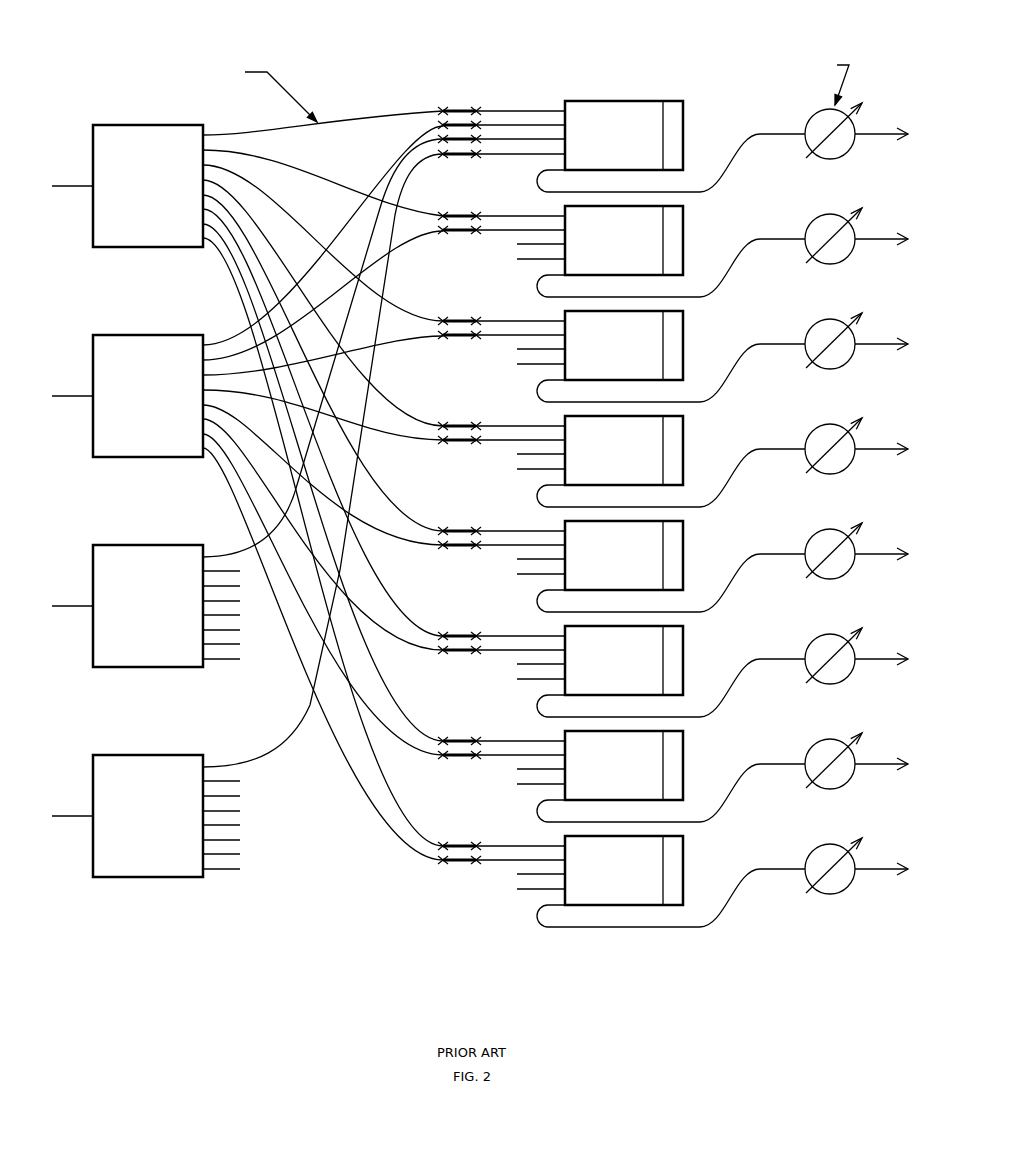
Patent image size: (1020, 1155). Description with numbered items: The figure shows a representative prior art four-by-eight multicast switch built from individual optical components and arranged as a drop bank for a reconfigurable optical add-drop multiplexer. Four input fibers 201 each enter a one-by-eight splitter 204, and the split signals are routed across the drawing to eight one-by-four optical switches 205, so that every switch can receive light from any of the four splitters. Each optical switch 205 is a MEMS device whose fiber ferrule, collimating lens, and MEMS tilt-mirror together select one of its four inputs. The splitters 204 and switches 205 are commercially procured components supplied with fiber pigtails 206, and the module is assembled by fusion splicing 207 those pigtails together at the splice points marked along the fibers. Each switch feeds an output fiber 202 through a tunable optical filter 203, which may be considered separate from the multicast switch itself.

The input fiber 201 is at (65, 502).
The output fiber 202 is at (887, 500).
The tunable optical filter 203 is at (790, 487).
The 1×8 splitter 204 is at (148, 514).
The 1×4 optical switch 205 is at (624, 513).
The fiber pigtail 206 is at (496, 490).
The fusion splicing 207 is at (568, 432).